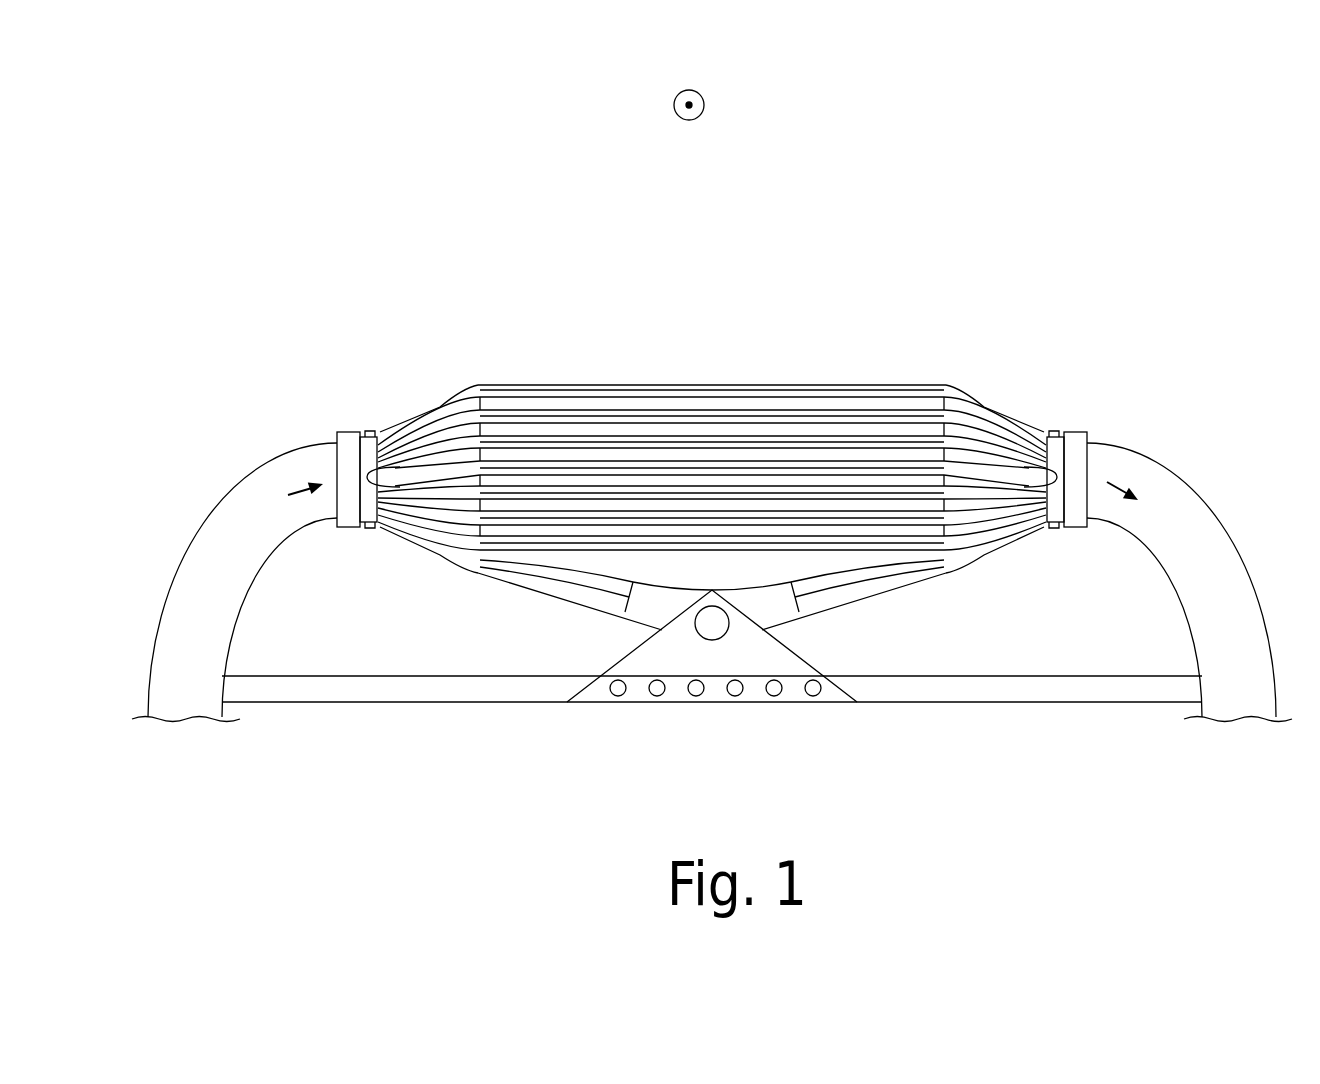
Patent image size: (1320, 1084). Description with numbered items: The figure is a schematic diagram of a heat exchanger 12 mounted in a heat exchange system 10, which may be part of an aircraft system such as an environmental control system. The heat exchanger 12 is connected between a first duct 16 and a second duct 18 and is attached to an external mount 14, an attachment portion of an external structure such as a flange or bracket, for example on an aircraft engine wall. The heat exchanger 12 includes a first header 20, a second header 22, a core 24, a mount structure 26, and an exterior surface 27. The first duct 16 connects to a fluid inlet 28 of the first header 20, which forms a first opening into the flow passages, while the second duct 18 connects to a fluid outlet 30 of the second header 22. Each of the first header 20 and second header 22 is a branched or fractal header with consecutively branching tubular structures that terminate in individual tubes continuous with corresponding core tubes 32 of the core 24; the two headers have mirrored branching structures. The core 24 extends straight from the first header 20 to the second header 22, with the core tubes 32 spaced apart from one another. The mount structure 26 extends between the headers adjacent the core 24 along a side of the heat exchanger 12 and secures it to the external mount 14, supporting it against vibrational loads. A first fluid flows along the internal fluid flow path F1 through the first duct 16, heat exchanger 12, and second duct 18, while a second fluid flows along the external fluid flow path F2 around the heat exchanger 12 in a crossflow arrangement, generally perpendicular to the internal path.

The heat exchange system 10 is at (380, 246).
The heat exchanger 12 is at (780, 350).
The external mount 14 is at (678, 650).
The first duct 16 is at (238, 517).
The second duct 18 is at (1148, 473).
The first header 20 is at (382, 414).
The second header 22 is at (1035, 407).
The core 24 is at (712, 388).
The mount structure 26 is at (772, 605).
The exterior surface 27 is at (857, 582).
The fluid inlet 28 is at (338, 432).
The fluid outlet 30 is at (1086, 450).
The core tubes 32 is at (583, 386).
The internal fluid flow path F1 is at (293, 493).
The external fluid flow path F2 is at (704, 101).